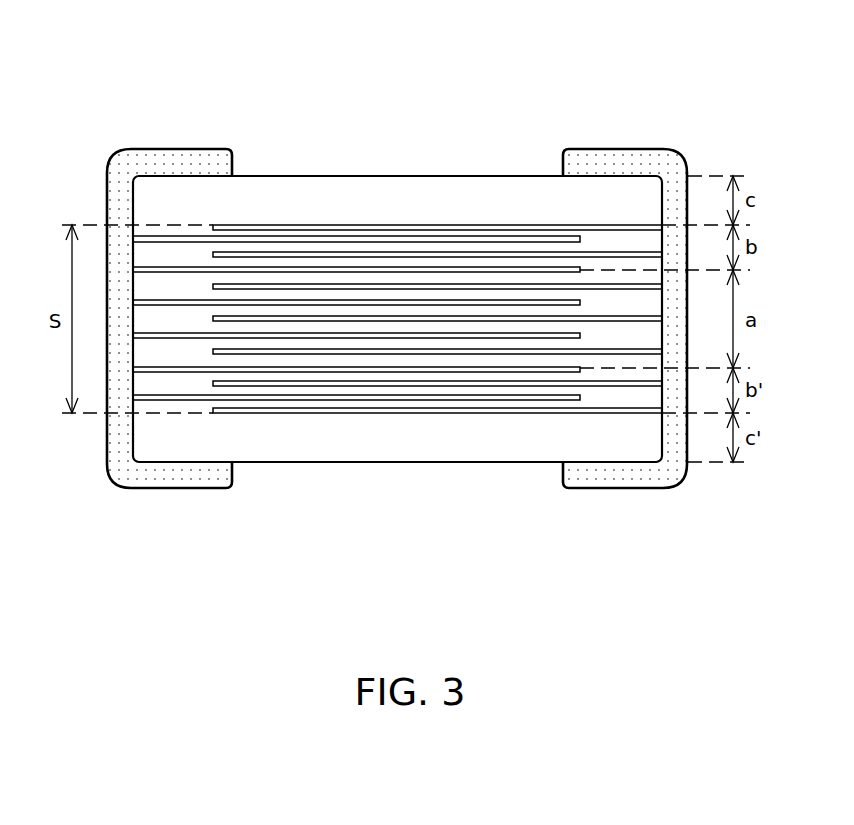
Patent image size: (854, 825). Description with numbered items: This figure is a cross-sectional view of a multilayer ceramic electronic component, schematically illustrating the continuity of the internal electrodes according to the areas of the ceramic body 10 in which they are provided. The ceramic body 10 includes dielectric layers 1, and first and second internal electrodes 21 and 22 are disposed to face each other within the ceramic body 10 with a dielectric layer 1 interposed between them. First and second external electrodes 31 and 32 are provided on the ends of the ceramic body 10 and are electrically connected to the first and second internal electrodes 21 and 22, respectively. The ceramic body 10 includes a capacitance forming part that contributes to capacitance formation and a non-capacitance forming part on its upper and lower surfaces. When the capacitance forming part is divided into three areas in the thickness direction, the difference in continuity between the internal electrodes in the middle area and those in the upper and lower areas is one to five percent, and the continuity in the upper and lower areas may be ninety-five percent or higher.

The dielectric layer 1 is at (397, 341).
The ceramic body 10 is at (333, 462).
The first internal electrode 21 is at (331, 228).
The second internal electrode 22 is at (425, 240).
The first external electrode 31 is at (165, 480).
The second external electrode 32 is at (628, 478).